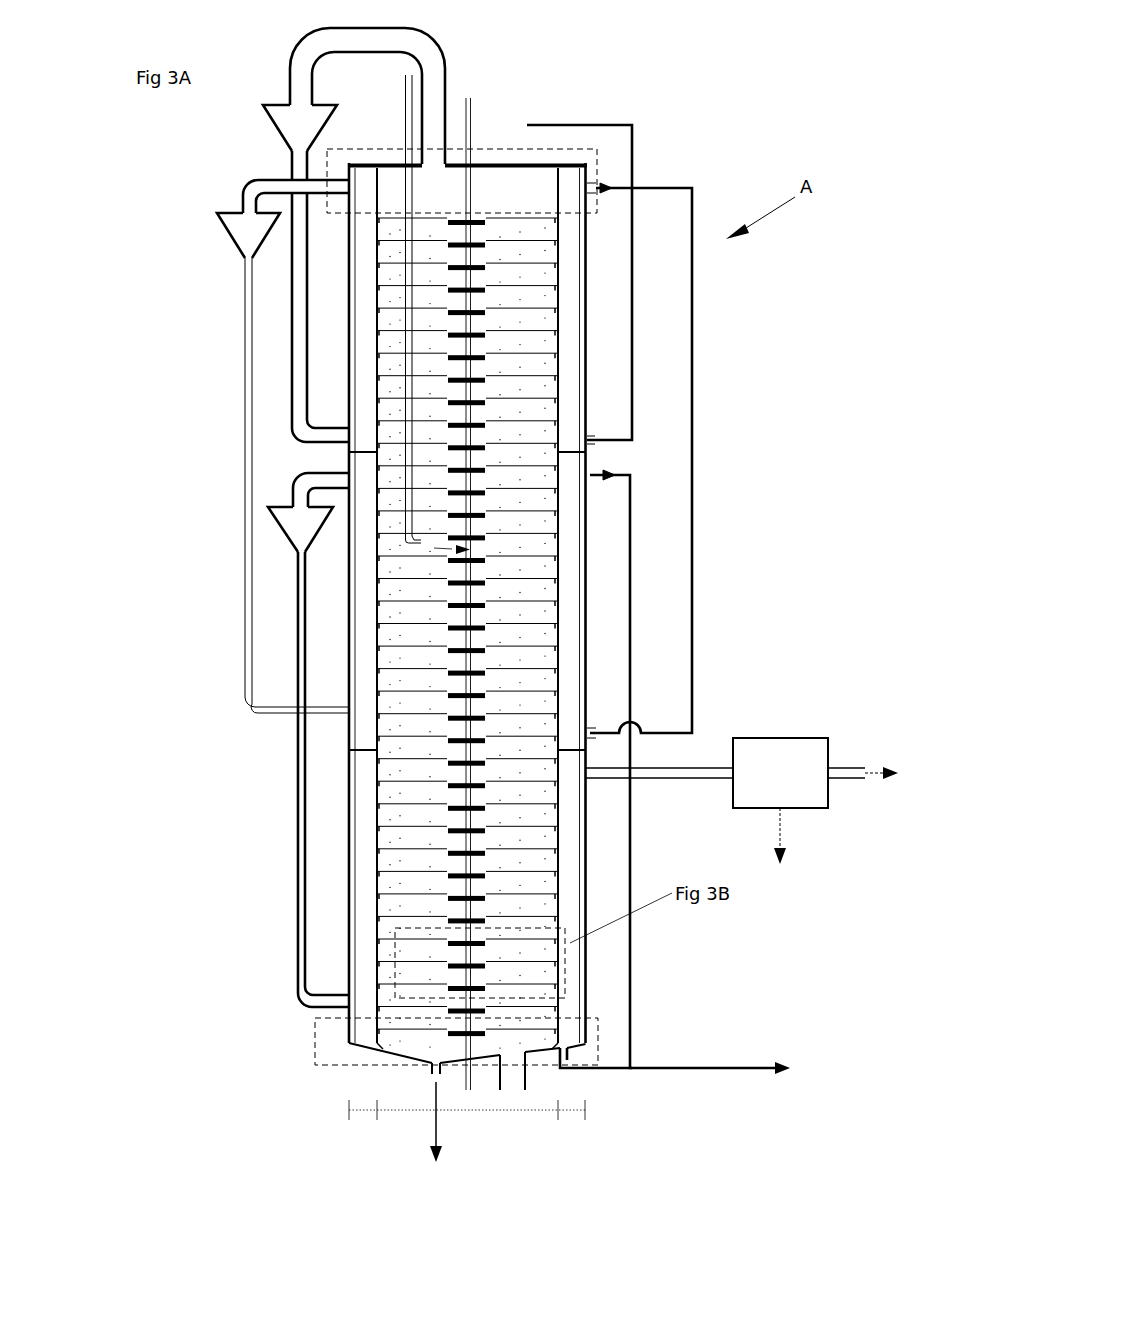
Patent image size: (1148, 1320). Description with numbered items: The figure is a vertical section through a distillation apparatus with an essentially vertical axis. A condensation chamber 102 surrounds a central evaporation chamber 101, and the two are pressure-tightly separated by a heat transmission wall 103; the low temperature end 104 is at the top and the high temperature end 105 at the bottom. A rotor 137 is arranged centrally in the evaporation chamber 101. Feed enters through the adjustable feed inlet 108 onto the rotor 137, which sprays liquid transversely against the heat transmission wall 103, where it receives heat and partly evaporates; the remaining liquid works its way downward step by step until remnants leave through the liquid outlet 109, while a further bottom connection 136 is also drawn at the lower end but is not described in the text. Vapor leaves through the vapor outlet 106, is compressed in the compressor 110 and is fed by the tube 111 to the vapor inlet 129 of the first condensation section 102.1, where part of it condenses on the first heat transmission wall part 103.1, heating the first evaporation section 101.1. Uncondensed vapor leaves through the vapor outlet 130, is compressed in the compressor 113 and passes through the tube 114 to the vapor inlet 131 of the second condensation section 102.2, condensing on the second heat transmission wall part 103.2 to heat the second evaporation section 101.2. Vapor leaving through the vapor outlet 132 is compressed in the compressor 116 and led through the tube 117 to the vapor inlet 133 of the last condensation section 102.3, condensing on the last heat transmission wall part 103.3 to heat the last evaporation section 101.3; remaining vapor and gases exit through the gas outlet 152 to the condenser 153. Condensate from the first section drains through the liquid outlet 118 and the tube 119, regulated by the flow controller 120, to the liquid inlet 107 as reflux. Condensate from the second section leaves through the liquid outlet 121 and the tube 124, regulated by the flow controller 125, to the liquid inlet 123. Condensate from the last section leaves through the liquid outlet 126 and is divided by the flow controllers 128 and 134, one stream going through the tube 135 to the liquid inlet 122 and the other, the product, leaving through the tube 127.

The evaporation chamber 101 is at (467, 624).
The condensation chamber 102 is at (467, 659).
The heat transmission wall 103 is at (563, 590).
The low temperature end 104 is at (462, 168).
The high temperature end 105 is at (441, 1041).
The vapor outlet 106 is at (440, 159).
The liquid inlet 107 is at (473, 220).
The adjustable feed inlet 108 is at (422, 548).
The liquid outlet 109 is at (429, 1077).
The compressor 110 is at (292, 120).
The tube 111 is at (292, 166).
The compressor 113 is at (247, 233).
The tube 114 is at (243, 427).
The compressor 116 is at (297, 545).
The tube 117 is at (296, 770).
The liquid outlet 118 is at (598, 435).
The tube 119 is at (637, 157).
The flow controller 120 is at (627, 425).
The liquid outlet 121 is at (598, 727).
The liquid inlet 122 is at (590, 482).
The liquid inlet 123 is at (593, 196).
The tube 124 is at (697, 615).
The flow controller 125 is at (687, 670).
The liquid outlet 126 is at (571, 1067).
The tube 127 is at (689, 1063).
The flow controller 128 is at (650, 1063).
The vapor inlet 129 is at (341, 431).
The vapor outlet 130 is at (341, 193).
The vapor inlet 131 is at (346, 705).
The vapor outlet 132 is at (341, 477).
The vapor inlet 133 is at (346, 997).
The flow controller 134 is at (625, 993).
The tube 135 is at (636, 854).
The outlet pipe 136 is at (517, 1080).
The rotor 137 is at (473, 366).
The gas outlet 152 is at (590, 779).
The condenser 153 is at (815, 801).
The first evaporation chamber section 101.1 is at (432, 299).
The second evaporation section 101.2 is at (396, 571).
The last evaporation section 101.3 is at (422, 793).
The first condensation section 102.1 is at (351, 336).
The second condensation section 102.2 is at (354, 641).
The last condensation section 102.3 is at (359, 853).
The first heat transmission wall part 103.1 is at (364, 369).
The second heat transmission wall part 103.2 is at (372, 729).
The last heat transmission wall part 103.3 is at (372, 910).